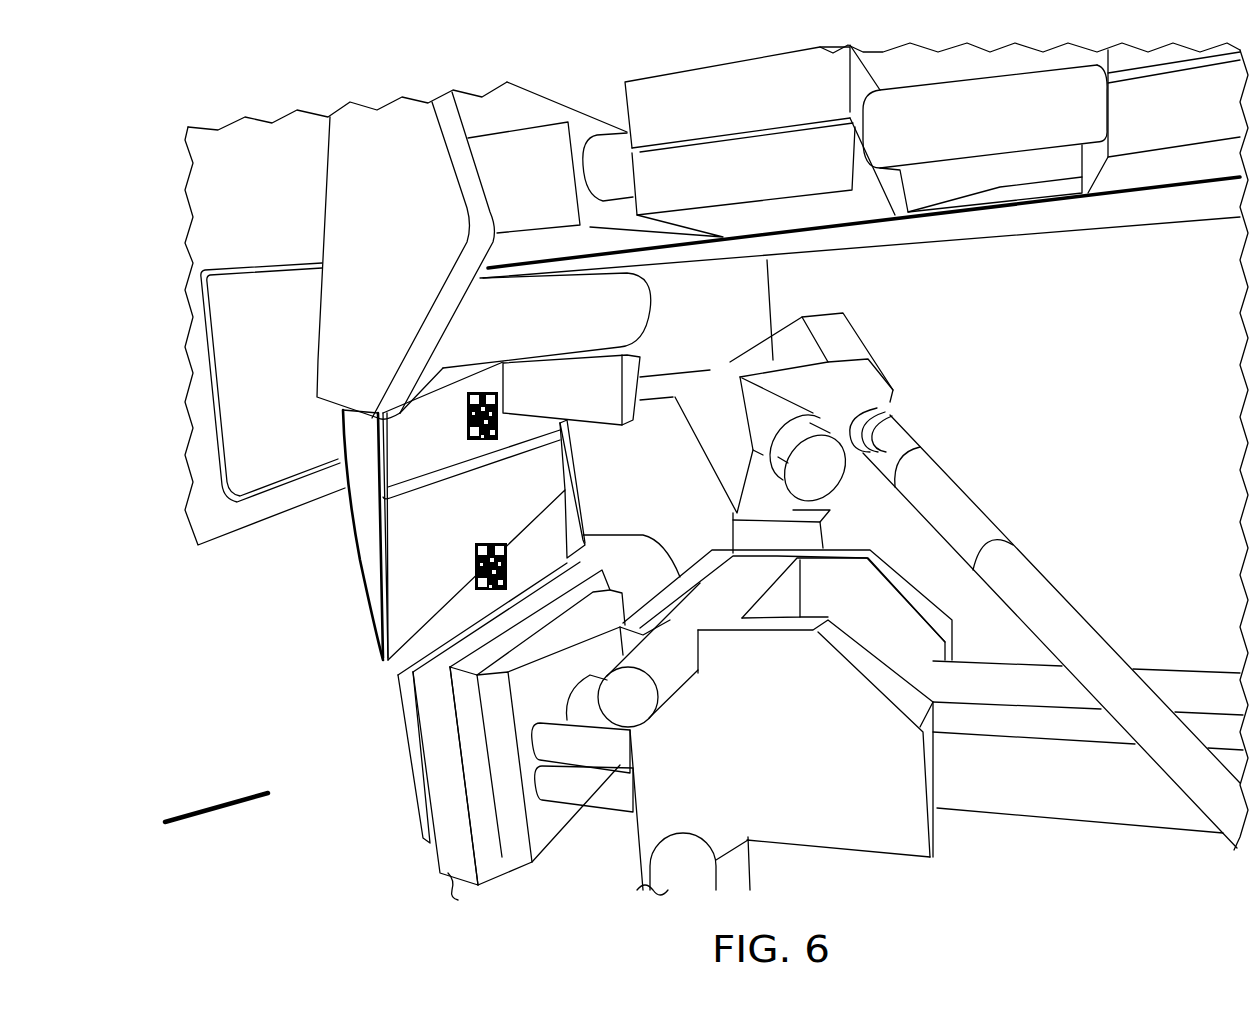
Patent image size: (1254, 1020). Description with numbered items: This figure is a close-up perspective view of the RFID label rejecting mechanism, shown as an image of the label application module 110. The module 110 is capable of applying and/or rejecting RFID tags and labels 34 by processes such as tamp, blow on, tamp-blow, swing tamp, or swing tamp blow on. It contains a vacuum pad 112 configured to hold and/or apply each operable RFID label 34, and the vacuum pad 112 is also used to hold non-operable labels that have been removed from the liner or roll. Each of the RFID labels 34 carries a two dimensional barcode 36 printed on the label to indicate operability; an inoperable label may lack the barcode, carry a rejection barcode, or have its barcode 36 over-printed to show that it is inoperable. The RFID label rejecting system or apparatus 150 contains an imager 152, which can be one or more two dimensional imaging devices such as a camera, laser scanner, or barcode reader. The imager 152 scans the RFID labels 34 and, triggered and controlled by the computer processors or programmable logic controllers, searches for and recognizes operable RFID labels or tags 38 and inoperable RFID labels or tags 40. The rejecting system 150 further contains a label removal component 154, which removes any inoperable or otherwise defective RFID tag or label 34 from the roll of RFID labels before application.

The RFID label 34 is at (388, 603).
The two dimensional barcode 36 is at (485, 543).
The operable RFID label 38 is at (376, 518).
The inoperable RFID label 40 is at (220, 350).
The label application module 110 is at (385, 741).
The vacuum pad 112 is at (455, 878).
The RFID label rejecting system 150 is at (991, 464).
The imager 152 is at (840, 482).
The label removal component 154 is at (176, 819).